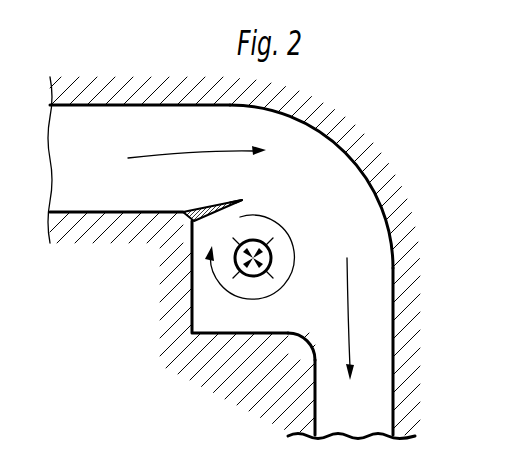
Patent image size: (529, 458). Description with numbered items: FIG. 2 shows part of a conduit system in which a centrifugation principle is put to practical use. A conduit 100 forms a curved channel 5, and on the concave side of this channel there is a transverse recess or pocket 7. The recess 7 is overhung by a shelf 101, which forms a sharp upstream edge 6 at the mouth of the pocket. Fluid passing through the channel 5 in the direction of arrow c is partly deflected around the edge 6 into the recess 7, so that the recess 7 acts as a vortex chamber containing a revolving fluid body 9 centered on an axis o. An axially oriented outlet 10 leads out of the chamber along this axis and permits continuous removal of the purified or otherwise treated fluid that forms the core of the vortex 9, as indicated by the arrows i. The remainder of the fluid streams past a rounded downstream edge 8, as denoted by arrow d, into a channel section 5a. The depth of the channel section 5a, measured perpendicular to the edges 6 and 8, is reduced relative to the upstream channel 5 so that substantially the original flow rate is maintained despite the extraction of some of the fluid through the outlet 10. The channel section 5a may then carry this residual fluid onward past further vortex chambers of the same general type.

The curved channel 5 is at (65, 140).
The channel section 5a is at (368, 395).
The conduit 100 is at (372, 162).
The shelf 101 is at (205, 204).
The upstream edge 6 is at (243, 198).
The recess 7 is at (205, 325).
The downstream edge 8 is at (303, 334).
The revolving fluid body 9 is at (295, 263).
The outlet 10 is at (262, 236).
The axis o is at (273, 256).
The arrows i is at (248, 296).
The arrow c is at (175, 157).
The arrow d is at (353, 318).